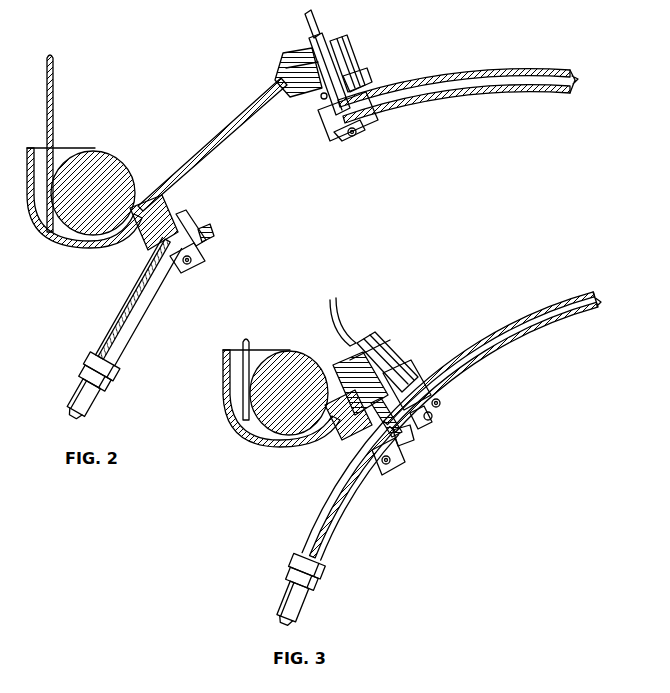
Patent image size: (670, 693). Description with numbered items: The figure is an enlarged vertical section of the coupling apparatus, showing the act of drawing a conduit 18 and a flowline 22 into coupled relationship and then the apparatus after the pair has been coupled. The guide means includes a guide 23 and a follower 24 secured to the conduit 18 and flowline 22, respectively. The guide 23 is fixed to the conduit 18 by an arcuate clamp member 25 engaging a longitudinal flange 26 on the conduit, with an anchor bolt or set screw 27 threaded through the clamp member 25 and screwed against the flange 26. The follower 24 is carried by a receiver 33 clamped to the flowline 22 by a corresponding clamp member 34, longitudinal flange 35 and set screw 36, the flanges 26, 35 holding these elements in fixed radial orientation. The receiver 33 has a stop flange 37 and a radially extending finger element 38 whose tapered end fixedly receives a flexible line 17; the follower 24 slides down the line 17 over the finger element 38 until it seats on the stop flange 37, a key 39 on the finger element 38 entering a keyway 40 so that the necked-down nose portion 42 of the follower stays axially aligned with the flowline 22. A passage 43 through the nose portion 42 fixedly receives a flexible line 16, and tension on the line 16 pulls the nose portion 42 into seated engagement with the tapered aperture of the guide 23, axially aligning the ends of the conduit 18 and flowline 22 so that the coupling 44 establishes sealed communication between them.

In FIG. 2, the flexible line 16 is at (53, 80).
In FIG. 3, the flexible line 16 is at (243, 340).
In FIG. 2, the flexible line 17 is at (313, 19).
In FIG. 3, the flexible line 17 is at (339, 313).
In FIG. 2, the conduit 18 is at (113, 309).
In FIG. 3, the conduit 18 is at (330, 540).
In FIG. 2, the flowline 22 is at (484, 70).
In FIG. 3, the flowline 22 is at (520, 316).
In FIG. 2, the guide 23 is at (97, 146).
In FIG. 3, the guide 23 is at (290, 347).
In FIG. 2, the follower 24 is at (364, 67).
In FIG. 3, the follower 24 is at (394, 335).
In FIG. 3, the arcuate clamp member 25 is at (345, 440).
In FIG. 3, the longitudinal flange 26 is at (380, 473).
In FIG. 3, the anchor bolt or set screw 27 is at (399, 470).
In FIG. 2, the receiver 33 is at (326, 106).
In FIG. 3, the receiver 33 is at (418, 378).
In FIG. 3, the clamp member 34 is at (433, 417).
In FIG. 3, the longitudinal flange 35 is at (441, 404).
In FIG. 3, the anchor bolt or set screw 36 is at (426, 428).
In FIG. 2, the stop flange 37 is at (320, 96).
In FIG. 2, the finger element or rod 38 is at (327, 38).
In FIG. 2, the key 39 is at (344, 52).
In FIG. 2, the keyway 40 is at (360, 84).
In FIG. 2, the necked-down nose or aligning portion 42 is at (282, 78).
In FIG. 2, the passage 43 is at (300, 68).
In FIG. 3, the passage 43 is at (346, 372).
In FIG. 2, the coupling 44 is at (216, 234).
In FIG. 3, the coupling 44 is at (411, 448).